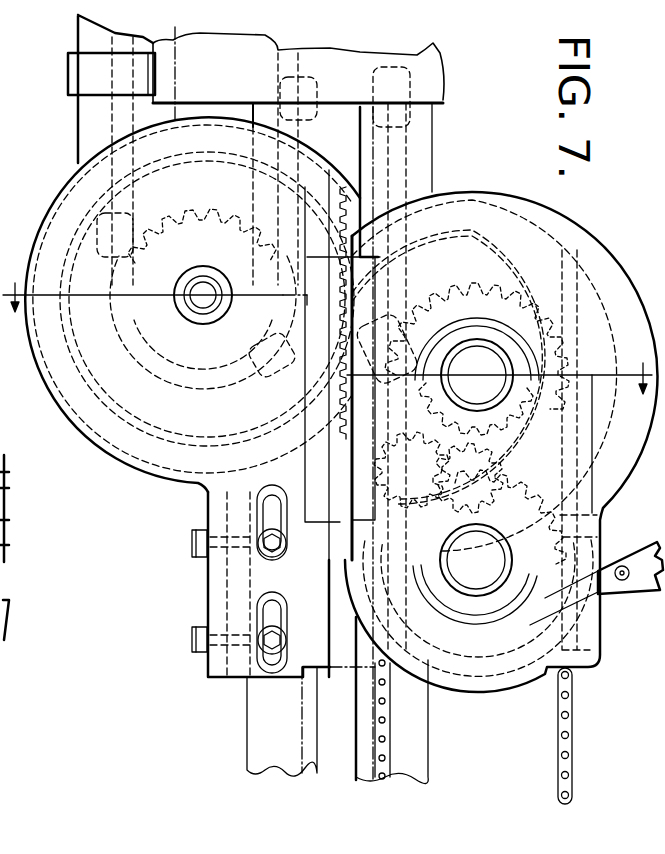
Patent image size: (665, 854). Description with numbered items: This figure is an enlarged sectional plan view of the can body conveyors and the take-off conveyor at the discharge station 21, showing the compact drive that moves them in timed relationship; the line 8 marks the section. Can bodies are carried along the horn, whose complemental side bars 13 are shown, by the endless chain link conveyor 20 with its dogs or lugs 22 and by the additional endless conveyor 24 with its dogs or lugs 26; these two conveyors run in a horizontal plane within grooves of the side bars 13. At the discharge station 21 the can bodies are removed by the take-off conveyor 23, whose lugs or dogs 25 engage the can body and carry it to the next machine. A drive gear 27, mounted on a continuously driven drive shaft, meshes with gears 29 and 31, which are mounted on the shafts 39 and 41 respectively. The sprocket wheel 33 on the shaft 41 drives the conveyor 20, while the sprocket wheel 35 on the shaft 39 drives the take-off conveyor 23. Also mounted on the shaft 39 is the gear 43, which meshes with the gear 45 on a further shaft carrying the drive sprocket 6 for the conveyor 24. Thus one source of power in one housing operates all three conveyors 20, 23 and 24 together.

The drive sprocket 6 is at (160, 213).
The section line 8 is at (328, 332).
The side bars 13 is at (247, 723).
The endless chain link conveyor 20 is at (435, 152).
The discharge station 21 is at (182, 497).
The dogs or lugs 22 is at (443, 55).
The take-off conveyor 23 is at (576, 720).
The additional endless conveyor 24 is at (110, 117).
The lugs or dogs 25 is at (574, 673).
The dogs or lugs 26 is at (335, 67).
The drive gear 27 is at (618, 513).
The gear 29 is at (374, 395).
The gear 31 is at (605, 527).
The sprocket wheel 33 is at (392, 478).
The sprocket wheel 35 is at (500, 283).
The shaft 39 is at (478, 355).
The shaft 41 is at (473, 580).
The gear 43 is at (343, 430).
The gear 45 is at (337, 233).